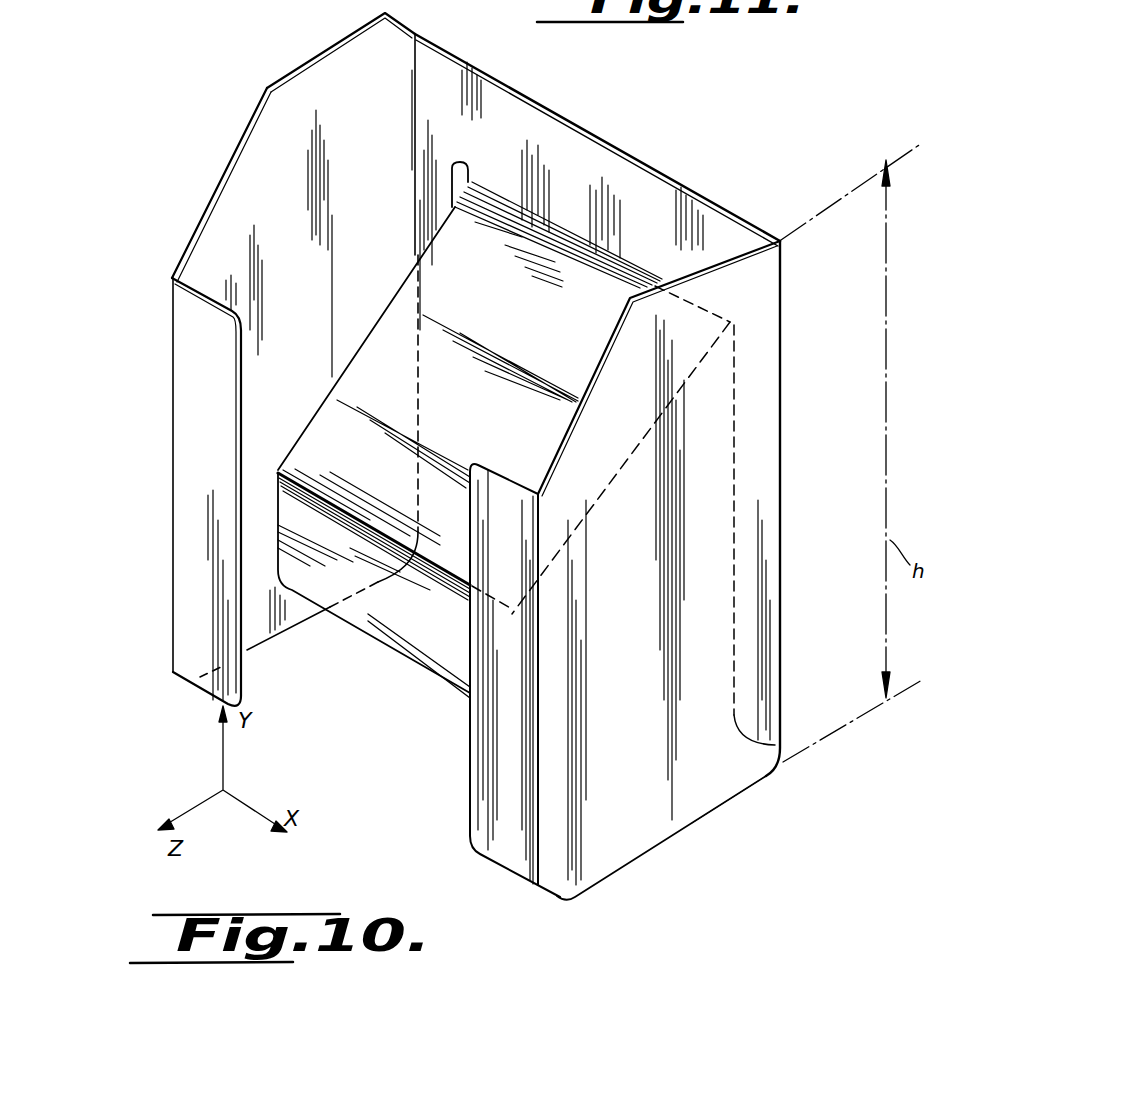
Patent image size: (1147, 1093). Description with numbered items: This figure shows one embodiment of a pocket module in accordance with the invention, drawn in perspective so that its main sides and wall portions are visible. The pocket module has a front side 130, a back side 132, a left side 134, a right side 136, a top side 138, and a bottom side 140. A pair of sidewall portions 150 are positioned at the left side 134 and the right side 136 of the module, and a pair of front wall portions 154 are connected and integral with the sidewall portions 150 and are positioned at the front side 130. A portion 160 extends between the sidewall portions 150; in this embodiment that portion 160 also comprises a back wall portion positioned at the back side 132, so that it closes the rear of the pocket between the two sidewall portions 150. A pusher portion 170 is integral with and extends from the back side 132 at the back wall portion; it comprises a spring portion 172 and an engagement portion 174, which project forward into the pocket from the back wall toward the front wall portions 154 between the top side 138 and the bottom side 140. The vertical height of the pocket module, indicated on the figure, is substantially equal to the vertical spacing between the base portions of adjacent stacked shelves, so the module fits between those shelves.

The front side 130 is at (269, 338).
The back side 132 is at (634, 156).
The left side 134 is at (267, 82).
The right side 136 is at (693, 570).
The top side 138 is at (331, 45).
The bottom side 140 is at (600, 889).
The sidewall portions 150 is at (203, 211).
The front wall portions 154 is at (200, 490).
The portion extending between the sidewall portions 160 is at (577, 121).
The pusher portion 170 is at (286, 549).
The spring portion 172 is at (352, 388).
The engagement portion 174 is at (423, 623).